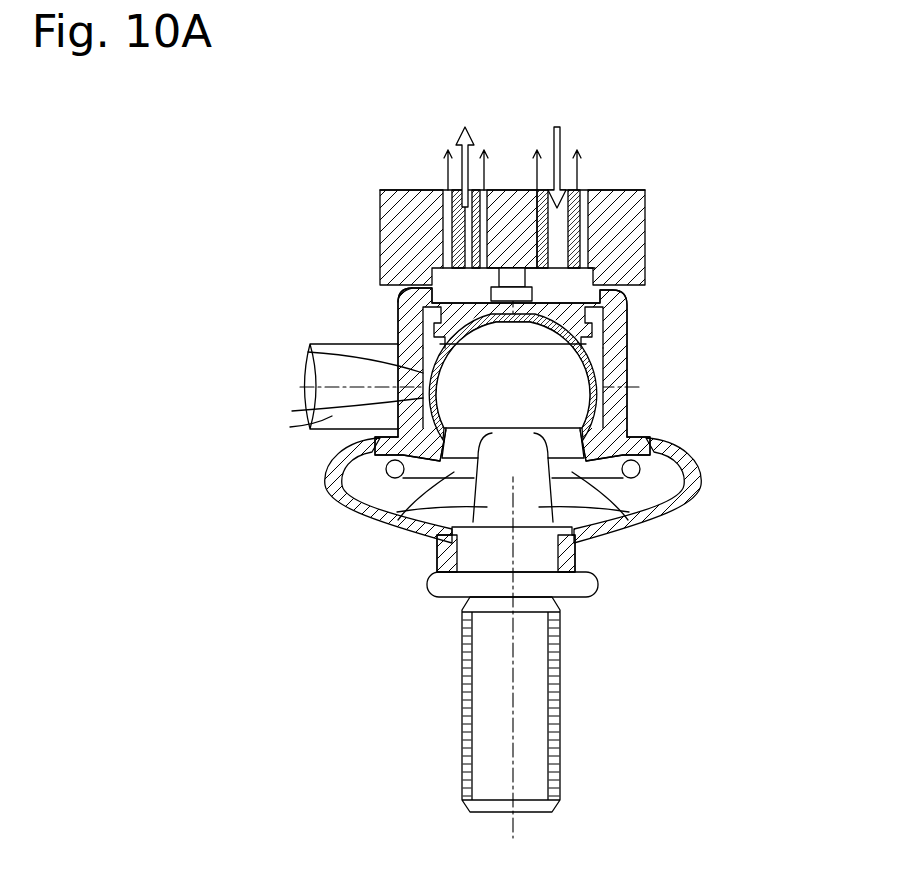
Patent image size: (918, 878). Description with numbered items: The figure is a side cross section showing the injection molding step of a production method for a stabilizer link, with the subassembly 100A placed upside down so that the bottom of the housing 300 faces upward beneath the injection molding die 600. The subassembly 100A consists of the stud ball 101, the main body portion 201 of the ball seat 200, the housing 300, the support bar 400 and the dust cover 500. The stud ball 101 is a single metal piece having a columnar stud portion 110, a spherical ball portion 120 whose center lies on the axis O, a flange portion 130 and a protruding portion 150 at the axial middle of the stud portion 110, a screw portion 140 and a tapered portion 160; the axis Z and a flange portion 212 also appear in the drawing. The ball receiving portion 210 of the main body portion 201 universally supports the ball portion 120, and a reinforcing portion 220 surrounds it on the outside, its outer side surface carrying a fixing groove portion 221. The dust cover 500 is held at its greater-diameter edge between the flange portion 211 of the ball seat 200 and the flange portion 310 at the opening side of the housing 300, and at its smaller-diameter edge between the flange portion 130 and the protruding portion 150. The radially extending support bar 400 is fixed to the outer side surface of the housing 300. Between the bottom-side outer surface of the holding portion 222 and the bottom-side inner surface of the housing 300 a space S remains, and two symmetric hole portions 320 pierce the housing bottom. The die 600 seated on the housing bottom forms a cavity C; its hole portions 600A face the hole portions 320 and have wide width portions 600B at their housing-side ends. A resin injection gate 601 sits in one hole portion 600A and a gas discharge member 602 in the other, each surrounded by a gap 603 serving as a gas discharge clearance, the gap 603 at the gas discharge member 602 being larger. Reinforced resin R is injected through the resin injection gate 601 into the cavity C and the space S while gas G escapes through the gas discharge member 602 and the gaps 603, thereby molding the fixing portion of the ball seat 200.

The subassembly 100A is at (712, 491).
The stud ball 101 is at (466, 731).
The stud portion 110 is at (532, 620).
The ball portion 120 is at (437, 411).
The flange portion 130 is at (430, 589).
The screw portion 140 is at (465, 775).
The protruding portion 150 is at (440, 548).
The tapered portion 160 is at (426, 520).
The ball seat 200 is at (503, 451).
The main body portion 201 is at (312, 408).
The ball receiving portion 210 is at (586, 549).
The flange portion 211 is at (666, 514).
The upper housing flange 212 is at (601, 313).
The reinforcing portion 220 is at (503, 451).
The fixing groove portion 221 is at (440, 333).
The holding portion 222 is at (418, 441).
The housing 300 is at (623, 343).
The flange portion 310 is at (621, 442).
The hole portion 320 is at (590, 274).
The support bar 400 is at (318, 418).
The dust cover 500 is at (494, 514).
The injection molding die 600 is at (518, 192).
The hole portion 600A is at (470, 250).
The wide width portion 600B is at (498, 283).
The resin injection gate 601 is at (618, 221).
The gas discharge member 602 is at (447, 213).
The gap 603 is at (462, 228).
The cavity C is at (466, 276).
The space S is at (398, 298).
The gas G is at (512, 154).
The reinforced resin R is at (557, 156).
The axis Z is at (453, 387).
The axis O is at (511, 568).